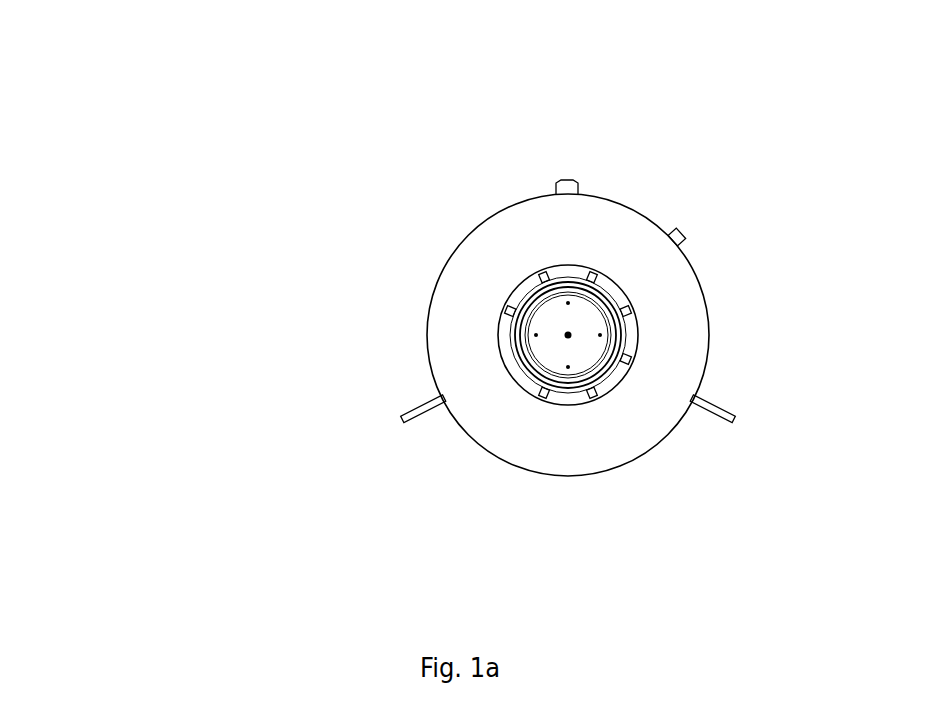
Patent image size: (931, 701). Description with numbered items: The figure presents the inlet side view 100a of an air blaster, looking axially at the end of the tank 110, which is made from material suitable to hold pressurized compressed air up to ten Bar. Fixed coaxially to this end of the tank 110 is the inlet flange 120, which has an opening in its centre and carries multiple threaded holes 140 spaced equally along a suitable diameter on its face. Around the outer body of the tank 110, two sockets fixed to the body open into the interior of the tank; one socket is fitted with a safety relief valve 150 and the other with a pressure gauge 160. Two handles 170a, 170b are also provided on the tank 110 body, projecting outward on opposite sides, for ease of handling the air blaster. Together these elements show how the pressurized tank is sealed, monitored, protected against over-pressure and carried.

The inlet side view 100a is at (113, 87).
The tank 110 is at (630, 394).
The inlet flange 120 is at (498, 333).
The threaded holes 140 is at (533, 272).
The safety relief valve 150 is at (567, 173).
The pressure gauge 160 is at (697, 230).
The handle 170a is at (402, 403).
The handle 170b is at (732, 400).